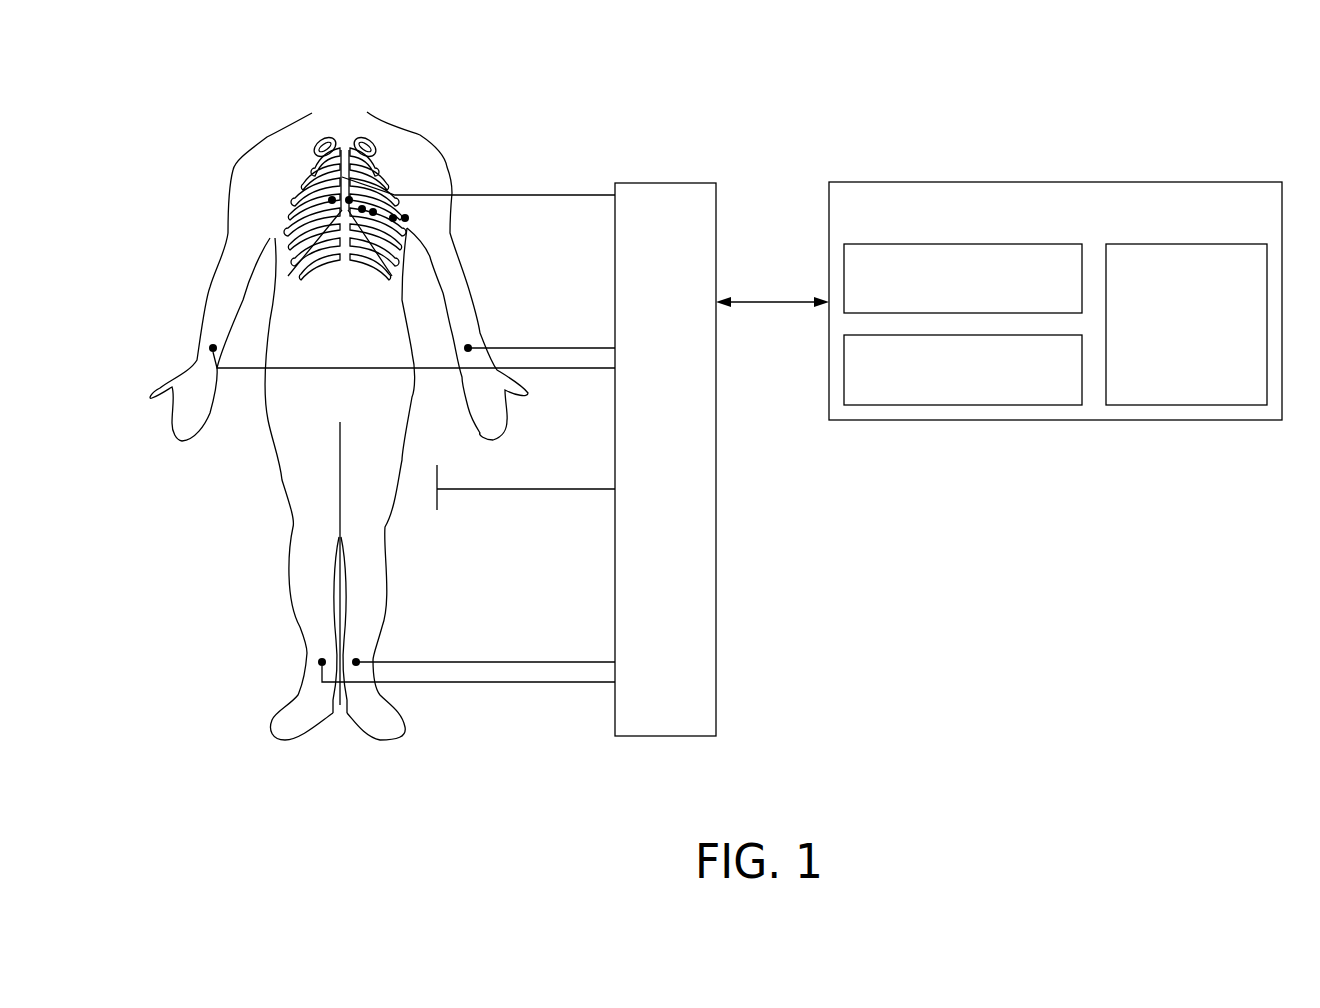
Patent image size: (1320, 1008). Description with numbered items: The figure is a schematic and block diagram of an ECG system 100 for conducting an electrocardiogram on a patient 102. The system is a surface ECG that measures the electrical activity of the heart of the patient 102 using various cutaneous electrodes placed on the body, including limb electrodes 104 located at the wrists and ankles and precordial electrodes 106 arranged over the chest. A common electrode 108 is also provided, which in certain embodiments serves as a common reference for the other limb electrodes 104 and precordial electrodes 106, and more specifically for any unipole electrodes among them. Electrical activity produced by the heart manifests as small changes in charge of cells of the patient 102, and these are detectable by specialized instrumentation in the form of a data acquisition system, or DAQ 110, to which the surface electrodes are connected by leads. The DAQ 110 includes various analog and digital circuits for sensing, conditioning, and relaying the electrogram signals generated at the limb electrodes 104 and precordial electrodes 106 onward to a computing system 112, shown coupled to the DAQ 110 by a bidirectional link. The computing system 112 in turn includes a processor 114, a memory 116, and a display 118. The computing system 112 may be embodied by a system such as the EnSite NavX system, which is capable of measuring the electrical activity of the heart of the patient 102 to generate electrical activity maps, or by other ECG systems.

The ECG system 100 is at (803, 157).
The patient 102 is at (447, 135).
The limb electrodes 104 is at (210, 346).
The precordial electrodes 106 is at (283, 224).
The common electrode 108 is at (437, 510).
The data acquisition system (DAQ) 110 is at (717, 608).
The computing system 112 is at (1200, 182).
The processor 114 is at (843, 268).
The memory 116 is at (973, 405).
The display 118 is at (1197, 405).